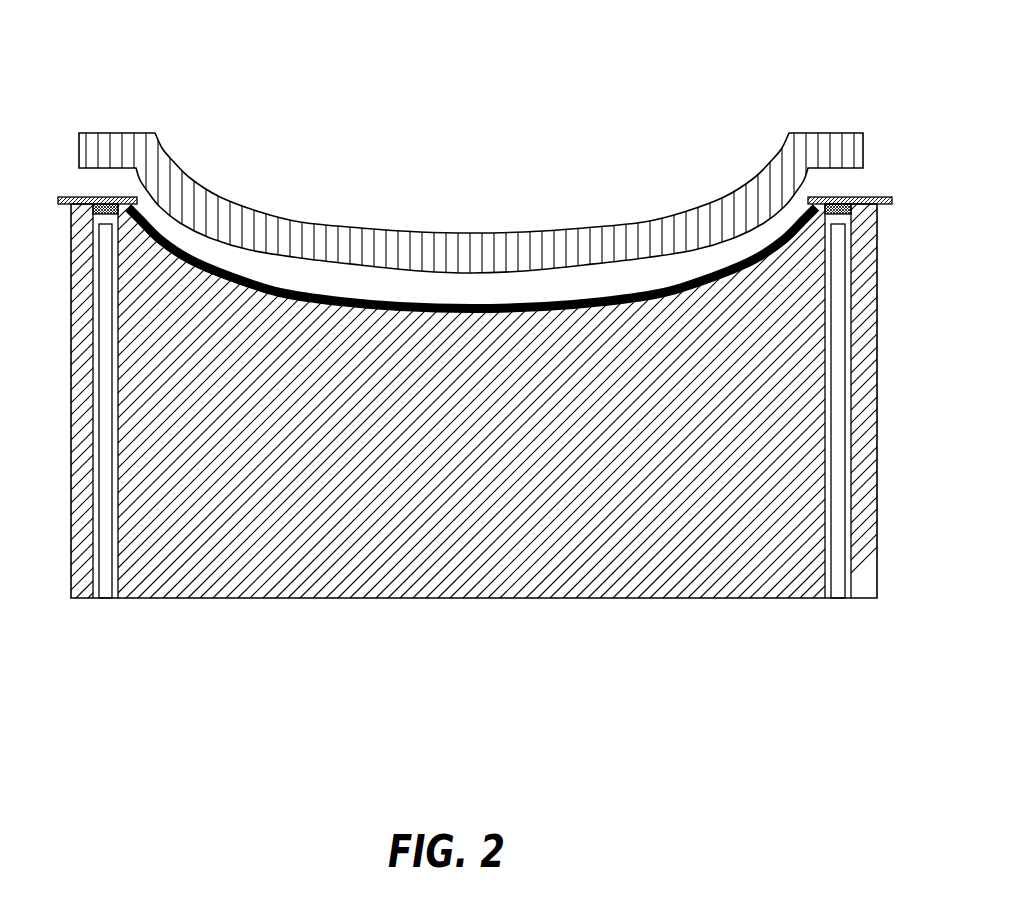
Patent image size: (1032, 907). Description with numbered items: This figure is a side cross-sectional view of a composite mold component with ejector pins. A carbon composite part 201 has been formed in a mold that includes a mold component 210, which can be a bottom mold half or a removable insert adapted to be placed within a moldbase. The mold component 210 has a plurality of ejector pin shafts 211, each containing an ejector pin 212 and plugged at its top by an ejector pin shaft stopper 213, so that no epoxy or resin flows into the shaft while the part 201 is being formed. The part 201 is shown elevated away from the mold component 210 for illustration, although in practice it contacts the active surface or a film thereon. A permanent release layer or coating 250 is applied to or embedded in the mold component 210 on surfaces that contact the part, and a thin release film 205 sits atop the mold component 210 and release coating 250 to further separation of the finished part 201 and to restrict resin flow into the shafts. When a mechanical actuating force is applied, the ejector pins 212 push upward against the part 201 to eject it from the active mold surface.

The carbon composite part 201 is at (533, 248).
The thin release film 205 is at (872, 197).
The mold component 210 is at (422, 562).
The ejector pin shaft 211 is at (118, 598).
The ejector pin 212 is at (100, 598).
The ejector pin shaft stopper 213 is at (104, 200).
The permanent release layer or coating 250 is at (273, 283).